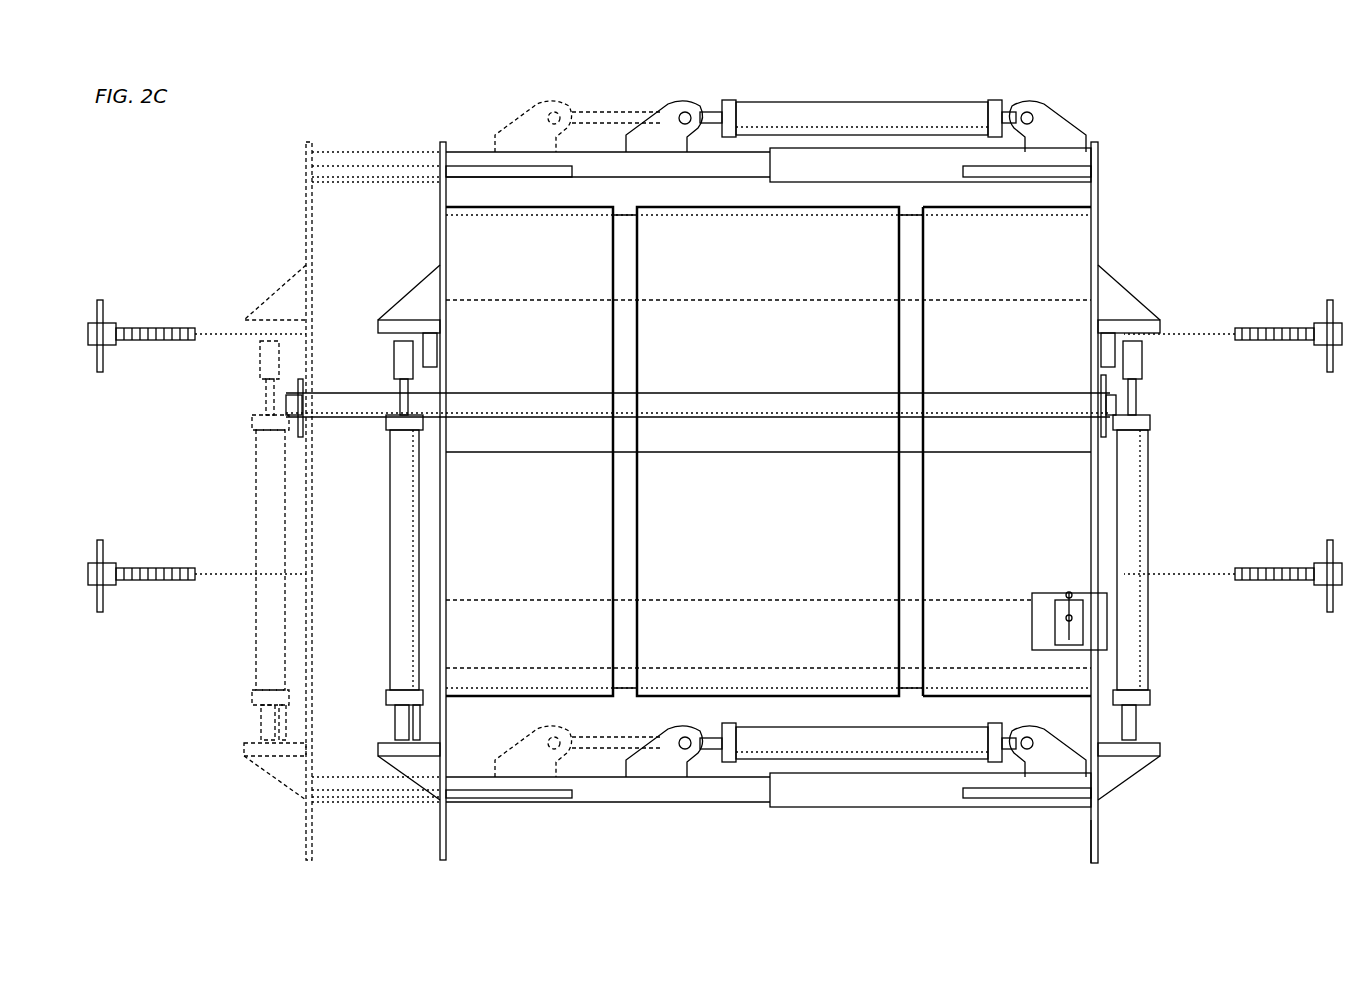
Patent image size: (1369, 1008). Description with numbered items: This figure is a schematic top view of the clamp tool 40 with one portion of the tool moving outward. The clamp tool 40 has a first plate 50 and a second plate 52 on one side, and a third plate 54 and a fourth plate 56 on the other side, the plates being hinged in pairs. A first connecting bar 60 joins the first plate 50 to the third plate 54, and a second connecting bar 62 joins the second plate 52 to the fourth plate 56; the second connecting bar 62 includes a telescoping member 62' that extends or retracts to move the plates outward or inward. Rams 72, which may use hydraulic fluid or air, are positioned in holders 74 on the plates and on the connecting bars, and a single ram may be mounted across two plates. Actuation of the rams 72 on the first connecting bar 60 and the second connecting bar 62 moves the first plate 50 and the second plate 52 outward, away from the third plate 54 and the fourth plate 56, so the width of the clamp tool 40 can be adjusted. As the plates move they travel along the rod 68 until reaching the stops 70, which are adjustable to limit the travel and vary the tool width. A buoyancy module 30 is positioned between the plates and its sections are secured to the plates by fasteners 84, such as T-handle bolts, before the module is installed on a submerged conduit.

The clamp tool 40 is at (1078, 92).
The first connecting bar 60 is at (1078, 150).
The rams 72 is at (858, 100).
The third plate 54 is at (1100, 230).
The first plate 50 is at (305, 187).
The fasteners 84 is at (150, 330).
The rod 68 is at (284, 402).
The stops 70 is at (297, 438).
The buoyancy module 30 is at (468, 625).
The second plate 52 is at (316, 832).
The second connecting bar 62 is at (768, 810).
The telescoping member 62' is at (536, 817).
The holders 74 is at (1125, 772).
The fourth plate 56 is at (1100, 838).